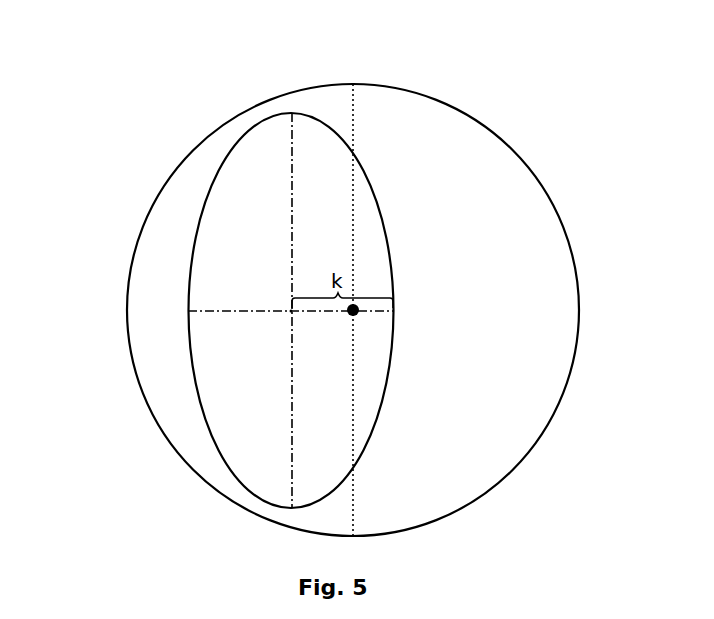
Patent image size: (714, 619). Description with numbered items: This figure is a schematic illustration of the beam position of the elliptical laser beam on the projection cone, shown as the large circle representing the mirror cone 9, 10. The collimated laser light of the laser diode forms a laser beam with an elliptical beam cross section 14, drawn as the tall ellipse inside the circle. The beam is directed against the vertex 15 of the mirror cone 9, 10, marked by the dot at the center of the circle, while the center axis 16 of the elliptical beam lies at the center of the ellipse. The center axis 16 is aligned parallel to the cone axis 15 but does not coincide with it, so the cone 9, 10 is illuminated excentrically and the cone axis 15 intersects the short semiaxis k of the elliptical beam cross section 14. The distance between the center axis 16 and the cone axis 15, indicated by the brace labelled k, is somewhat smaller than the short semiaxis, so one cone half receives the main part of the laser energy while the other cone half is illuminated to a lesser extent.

The mirror cone 9 is at (365, 307).
The mirror cone 10 is at (447, 200).
The elliptical beam cross section 14 is at (252, 188).
The vertex of the mirror cone 15 is at (359, 315).
The center axis of the elliptical laser beam 16 is at (289, 312).